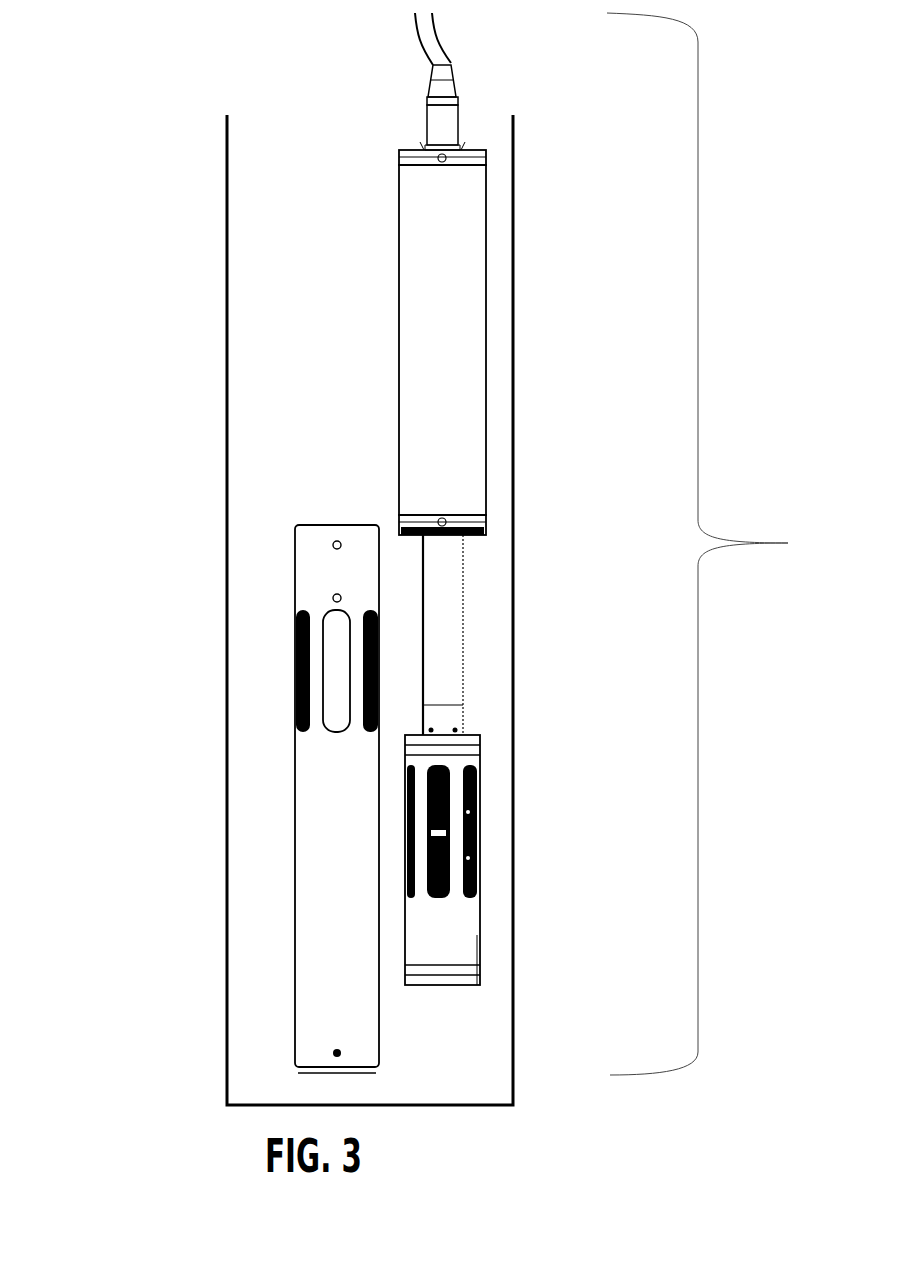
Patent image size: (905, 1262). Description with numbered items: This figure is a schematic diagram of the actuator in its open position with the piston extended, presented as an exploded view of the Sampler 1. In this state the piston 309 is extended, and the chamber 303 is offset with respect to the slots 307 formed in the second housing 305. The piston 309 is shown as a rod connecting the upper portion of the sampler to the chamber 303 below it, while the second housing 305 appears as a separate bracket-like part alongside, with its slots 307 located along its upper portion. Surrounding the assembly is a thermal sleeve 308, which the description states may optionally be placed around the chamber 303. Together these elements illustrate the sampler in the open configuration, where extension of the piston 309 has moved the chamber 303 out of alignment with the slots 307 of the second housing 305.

The Sampler 1 is at (713, 544).
The chamber 303 is at (512, 860).
The second housing 305 is at (292, 917).
The slots 307 is at (290, 626).
The thermal sleeve 308 is at (227, 238).
The piston 309 is at (437, 630).